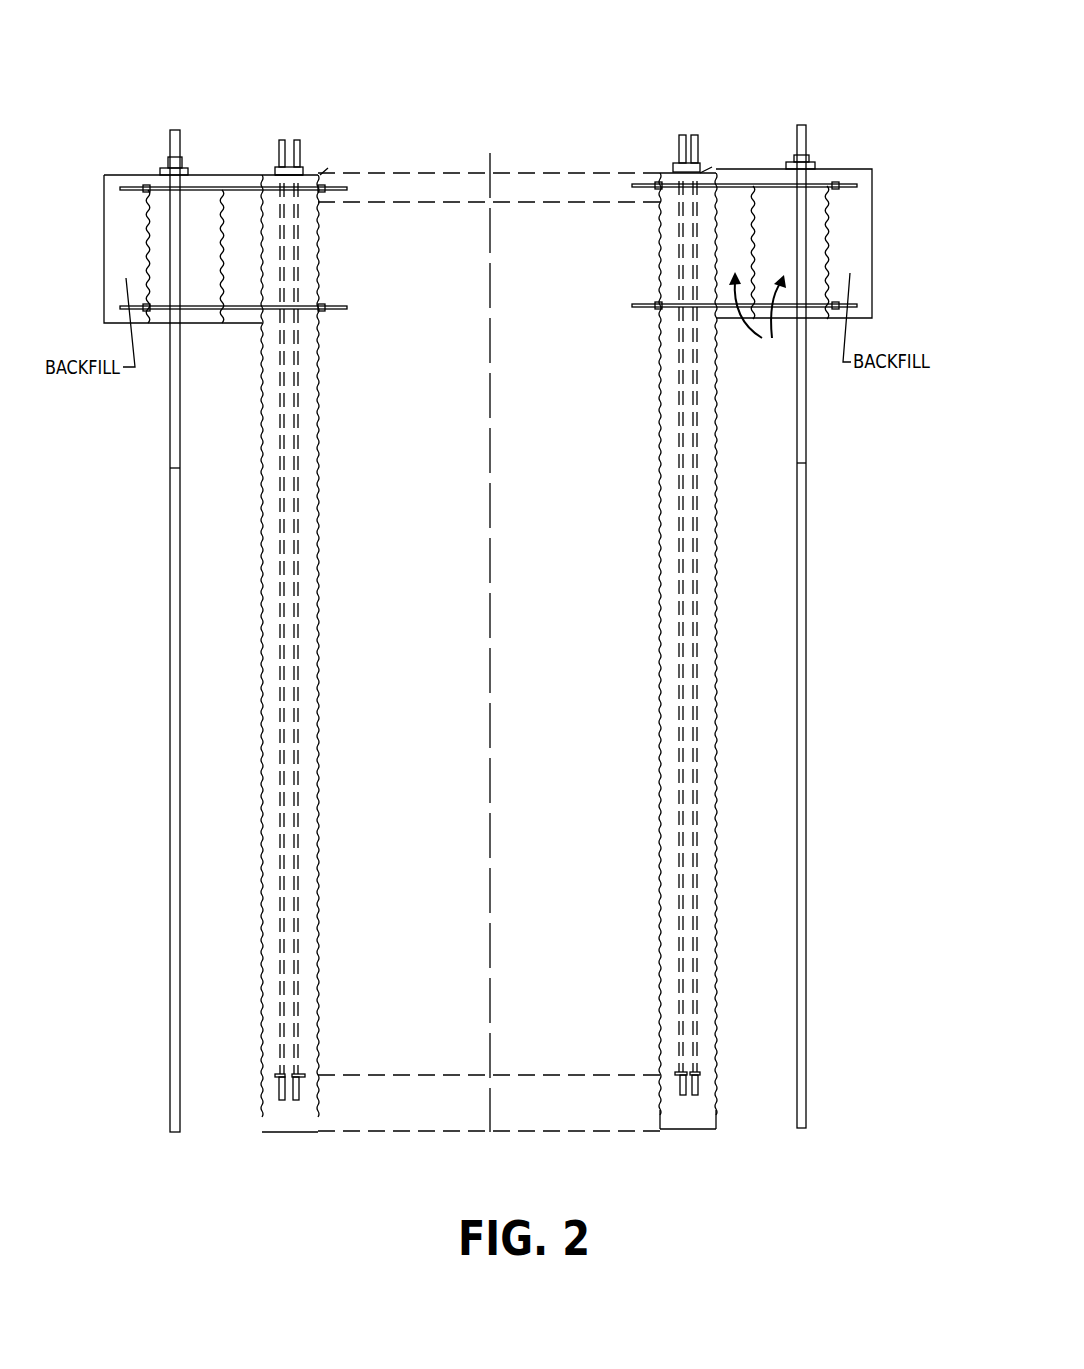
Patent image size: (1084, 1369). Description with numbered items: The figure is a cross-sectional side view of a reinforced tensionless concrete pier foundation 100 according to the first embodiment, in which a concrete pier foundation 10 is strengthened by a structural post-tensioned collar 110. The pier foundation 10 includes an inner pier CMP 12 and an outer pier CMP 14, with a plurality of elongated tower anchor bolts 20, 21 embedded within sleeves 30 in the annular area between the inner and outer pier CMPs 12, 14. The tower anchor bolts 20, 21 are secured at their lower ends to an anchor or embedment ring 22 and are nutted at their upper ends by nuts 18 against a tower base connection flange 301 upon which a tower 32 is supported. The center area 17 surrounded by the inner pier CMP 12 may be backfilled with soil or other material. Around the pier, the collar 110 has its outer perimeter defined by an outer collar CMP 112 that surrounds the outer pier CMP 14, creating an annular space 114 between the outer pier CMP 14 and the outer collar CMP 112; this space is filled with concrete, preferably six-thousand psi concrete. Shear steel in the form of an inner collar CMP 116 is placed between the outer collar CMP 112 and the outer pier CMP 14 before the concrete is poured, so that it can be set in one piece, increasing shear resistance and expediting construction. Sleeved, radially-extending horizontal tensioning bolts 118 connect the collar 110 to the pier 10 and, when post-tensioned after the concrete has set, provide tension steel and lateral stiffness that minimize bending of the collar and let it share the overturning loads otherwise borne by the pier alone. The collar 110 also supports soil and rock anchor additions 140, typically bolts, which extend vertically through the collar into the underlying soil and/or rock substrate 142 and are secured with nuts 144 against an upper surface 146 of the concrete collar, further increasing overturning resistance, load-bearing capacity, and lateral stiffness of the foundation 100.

The reinforced tensionless concrete pier foundation 100 is at (926, 91).
The concrete pier foundation 10 is at (733, 423).
The inner pier CMP 12 is at (667, 1125).
The outer pier CMP 14 is at (717, 1120).
The center area 17 is at (560, 677).
The nuts 18 is at (678, 160).
The tower anchor bolt 20 is at (282, 140).
The tower anchor bolt 21 is at (297, 138).
The anchor or embedment ring 22 is at (276, 1080).
The sleeves 30 is at (284, 568).
The tower base connection flange 301 is at (303, 170).
The tower 32 is at (295, 140).
The structural post-tensioned collar 110 is at (775, 254).
The outer collar CMP 112 is at (830, 212).
The annular space 114 is at (762, 321).
The inner collar CMP 116 is at (218, 303).
The horizontal tensioning bolts 118 is at (118, 305).
The soil and rock anchor additions 140 is at (806, 553).
The soil and/or rock substrate 142 is at (887, 784).
The nuts 144 is at (807, 157).
The upper surface 146 is at (740, 170).